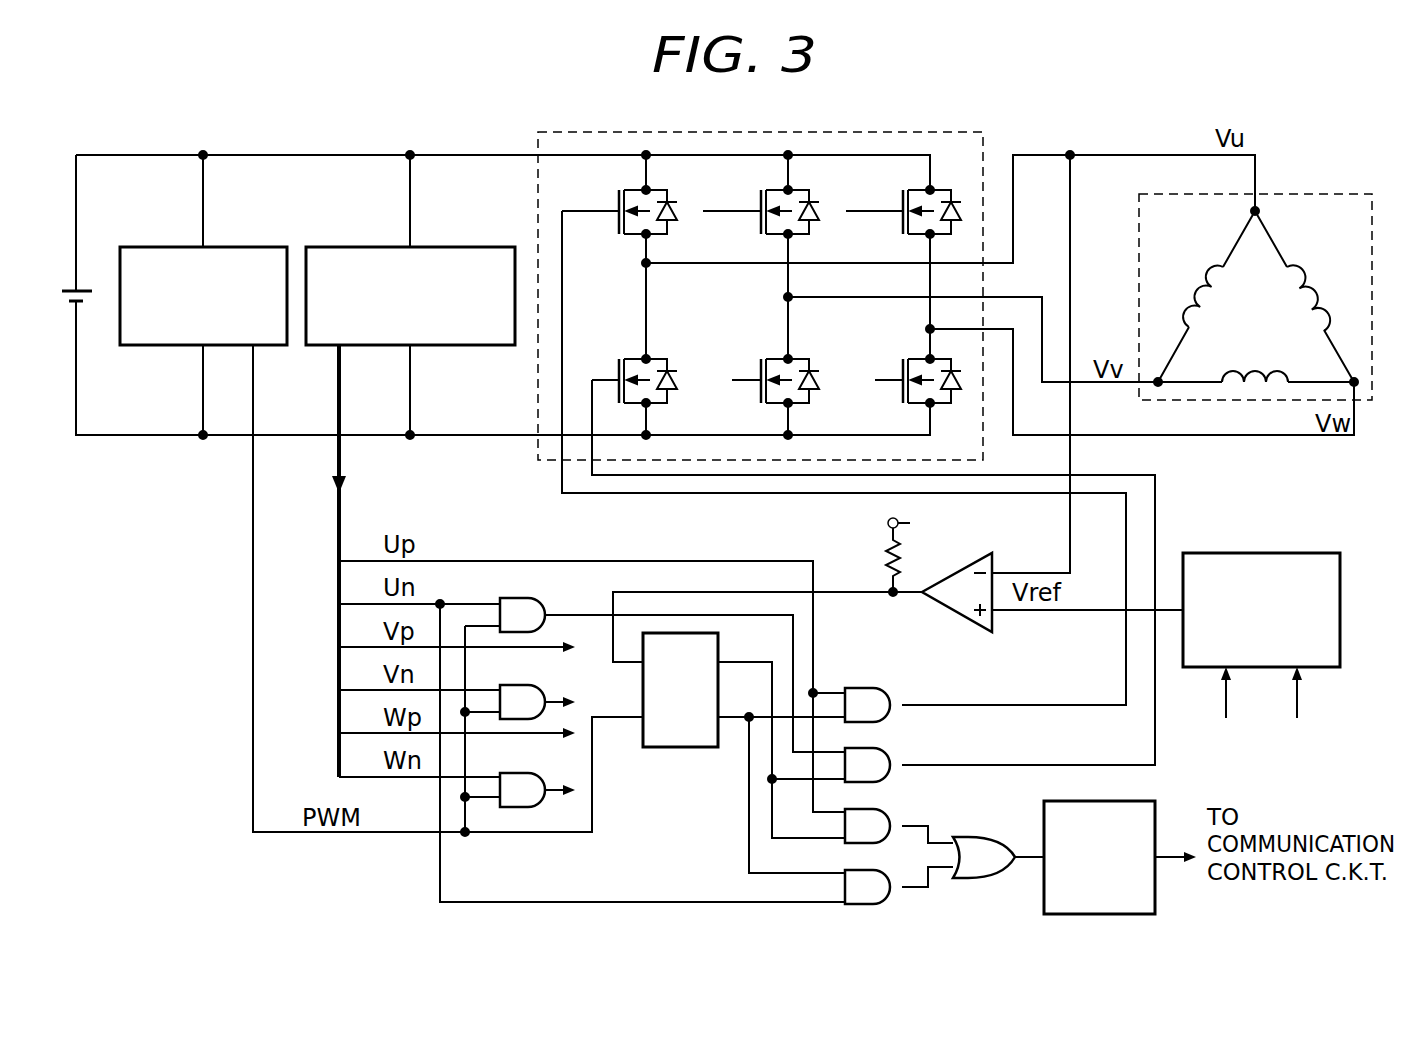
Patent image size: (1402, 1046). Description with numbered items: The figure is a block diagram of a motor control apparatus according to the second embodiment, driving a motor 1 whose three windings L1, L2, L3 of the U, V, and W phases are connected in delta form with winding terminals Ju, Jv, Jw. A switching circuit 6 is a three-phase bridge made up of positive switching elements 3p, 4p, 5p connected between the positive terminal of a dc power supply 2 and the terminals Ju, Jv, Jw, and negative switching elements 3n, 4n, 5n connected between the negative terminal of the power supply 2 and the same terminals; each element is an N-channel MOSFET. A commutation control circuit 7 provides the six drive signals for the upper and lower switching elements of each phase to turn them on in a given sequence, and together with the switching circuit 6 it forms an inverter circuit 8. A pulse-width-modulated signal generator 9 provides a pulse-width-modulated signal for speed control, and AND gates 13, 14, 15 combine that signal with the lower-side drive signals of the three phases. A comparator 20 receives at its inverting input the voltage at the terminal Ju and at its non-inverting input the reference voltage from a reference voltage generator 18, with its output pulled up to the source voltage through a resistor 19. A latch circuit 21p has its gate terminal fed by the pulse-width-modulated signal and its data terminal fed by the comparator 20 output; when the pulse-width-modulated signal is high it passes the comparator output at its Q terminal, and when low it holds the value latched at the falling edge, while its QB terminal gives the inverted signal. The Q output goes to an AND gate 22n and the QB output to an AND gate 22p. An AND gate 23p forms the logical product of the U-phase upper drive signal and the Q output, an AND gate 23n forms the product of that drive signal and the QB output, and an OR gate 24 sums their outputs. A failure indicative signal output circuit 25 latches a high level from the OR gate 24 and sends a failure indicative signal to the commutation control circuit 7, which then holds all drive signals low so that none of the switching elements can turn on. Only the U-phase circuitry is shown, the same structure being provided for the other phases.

The motor 1 is at (1255, 278).
The dc power supply 2 is at (83, 290).
The positive switching element 3p is at (617, 200).
The negative switching element 3n is at (617, 369).
The positive switching element 4p is at (759, 200).
The negative switching element 4n is at (759, 369).
The positive switching element 5p is at (901, 200).
The negative switching element 5n is at (901, 369).
The switching circuit 6 is at (538, 233).
The commutation control circuit 7 is at (447, 247).
The inverter circuit 8 is at (525, 202).
The PWM signal generator 9 is at (243, 247).
The AND gate 13 is at (532, 599).
The AND gate 14 is at (532, 686).
The AND gate 15 is at (532, 774).
The reference voltage generator 18 is at (1284, 553).
The resistor 19 is at (884, 558).
The comparator 20 is at (960, 562).
The latch circuit 21p is at (672, 748).
The AND gate 22p is at (880, 686).
The AND gate 22n is at (906, 750).
The AND gate 23p is at (906, 811).
The AND gate 23n is at (904, 905).
The OR gate 24 is at (986, 837).
The failure indicative signal output circuit 25 is at (1156, 816).
The winding L1 is at (1184, 288).
The winding L2 is at (1262, 370).
The winding L3 is at (1304, 296).
The winding terminal Ju is at (1250, 211).
The winding terminal Jv is at (1165, 381).
The winding terminal Jw is at (1354, 380).